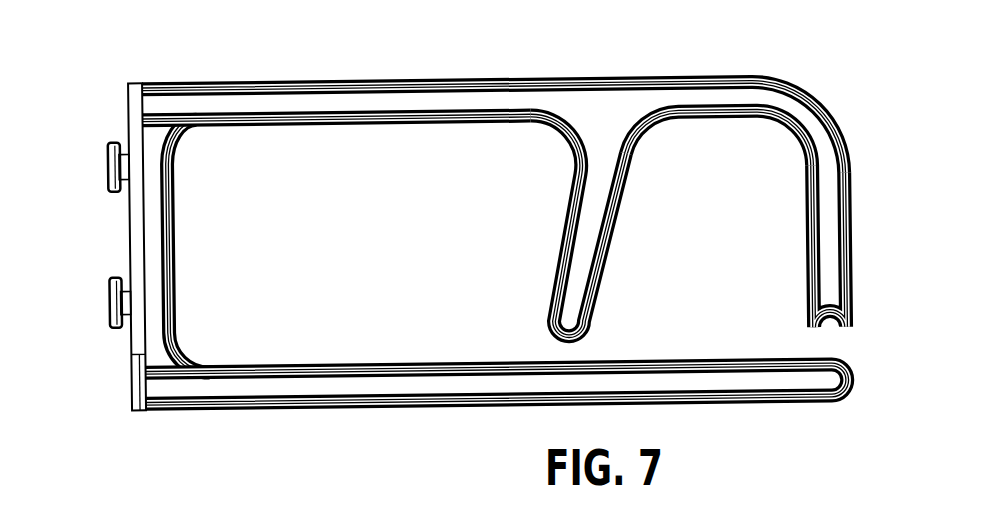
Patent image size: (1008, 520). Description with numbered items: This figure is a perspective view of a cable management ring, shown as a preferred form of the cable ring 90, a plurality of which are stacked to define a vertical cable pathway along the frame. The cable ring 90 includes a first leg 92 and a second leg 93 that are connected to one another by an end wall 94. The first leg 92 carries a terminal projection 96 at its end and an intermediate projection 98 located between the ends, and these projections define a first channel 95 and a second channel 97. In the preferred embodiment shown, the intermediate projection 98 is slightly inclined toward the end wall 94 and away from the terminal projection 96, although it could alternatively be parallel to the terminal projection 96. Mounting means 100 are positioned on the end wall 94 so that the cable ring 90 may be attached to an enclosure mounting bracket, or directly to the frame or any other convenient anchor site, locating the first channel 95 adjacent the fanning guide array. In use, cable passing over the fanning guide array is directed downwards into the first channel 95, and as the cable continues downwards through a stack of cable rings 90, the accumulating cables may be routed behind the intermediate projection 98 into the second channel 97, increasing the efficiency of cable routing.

The cable ring 90 is at (278, 70).
The first leg 92 is at (507, 100).
The second leg 93 is at (343, 393).
The end wall 94 is at (155, 231).
The first channel 95 is at (727, 150).
The terminal projection 96 is at (835, 258).
The second channel 97 is at (363, 157).
The intermediate projection 98 is at (603, 177).
The mounting means 100 is at (108, 166).